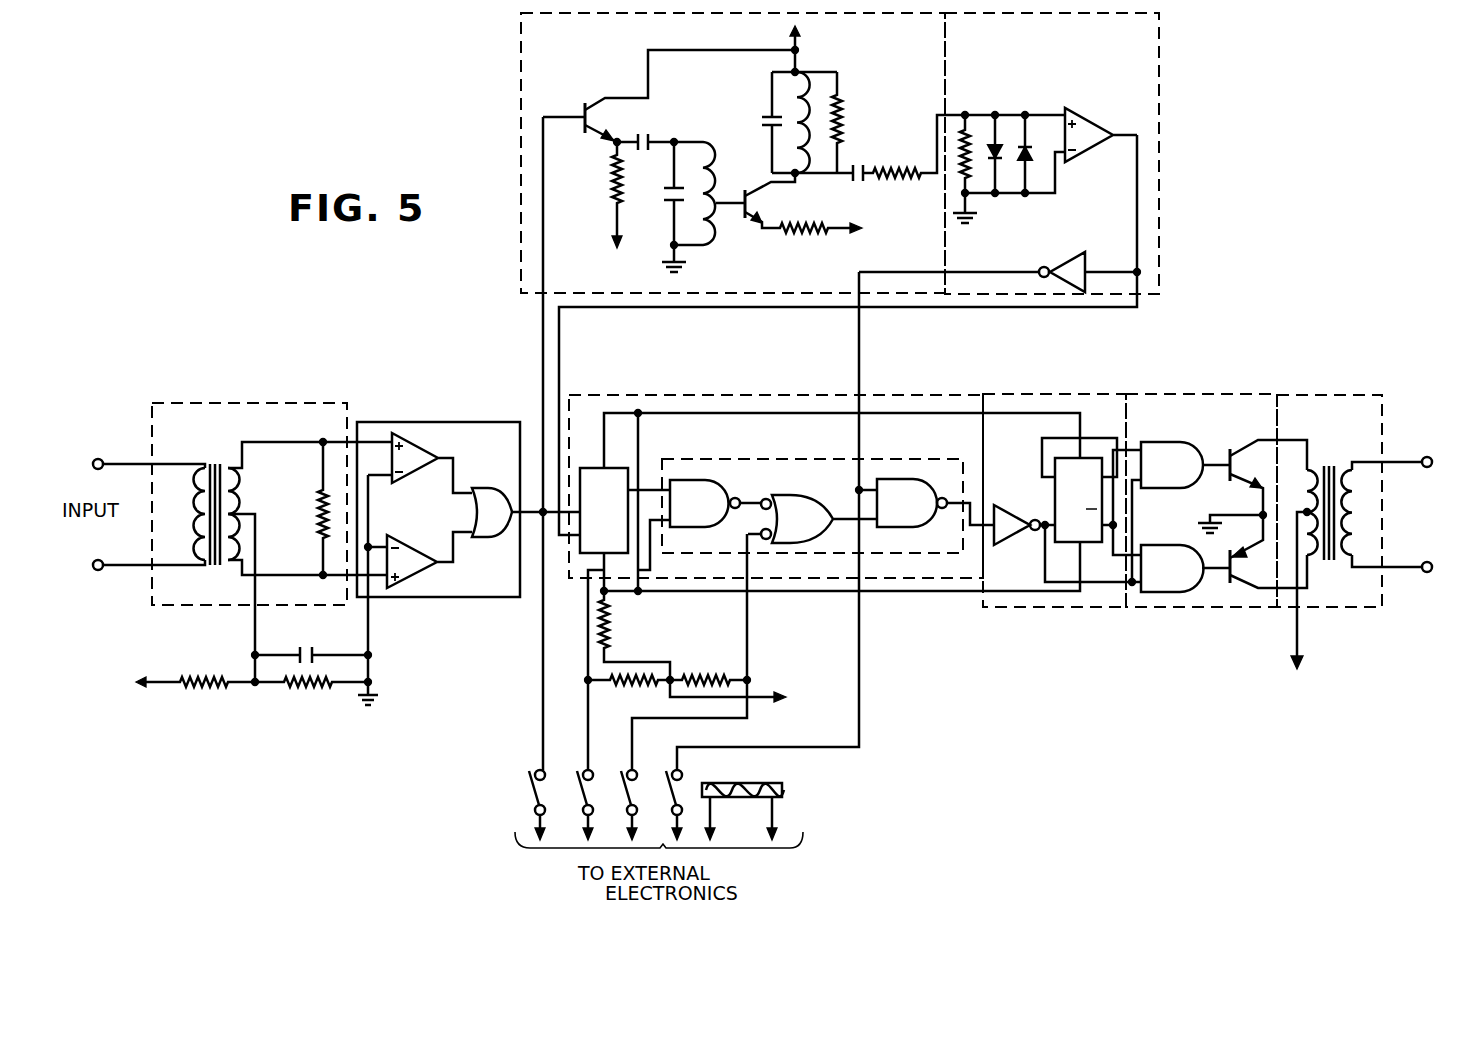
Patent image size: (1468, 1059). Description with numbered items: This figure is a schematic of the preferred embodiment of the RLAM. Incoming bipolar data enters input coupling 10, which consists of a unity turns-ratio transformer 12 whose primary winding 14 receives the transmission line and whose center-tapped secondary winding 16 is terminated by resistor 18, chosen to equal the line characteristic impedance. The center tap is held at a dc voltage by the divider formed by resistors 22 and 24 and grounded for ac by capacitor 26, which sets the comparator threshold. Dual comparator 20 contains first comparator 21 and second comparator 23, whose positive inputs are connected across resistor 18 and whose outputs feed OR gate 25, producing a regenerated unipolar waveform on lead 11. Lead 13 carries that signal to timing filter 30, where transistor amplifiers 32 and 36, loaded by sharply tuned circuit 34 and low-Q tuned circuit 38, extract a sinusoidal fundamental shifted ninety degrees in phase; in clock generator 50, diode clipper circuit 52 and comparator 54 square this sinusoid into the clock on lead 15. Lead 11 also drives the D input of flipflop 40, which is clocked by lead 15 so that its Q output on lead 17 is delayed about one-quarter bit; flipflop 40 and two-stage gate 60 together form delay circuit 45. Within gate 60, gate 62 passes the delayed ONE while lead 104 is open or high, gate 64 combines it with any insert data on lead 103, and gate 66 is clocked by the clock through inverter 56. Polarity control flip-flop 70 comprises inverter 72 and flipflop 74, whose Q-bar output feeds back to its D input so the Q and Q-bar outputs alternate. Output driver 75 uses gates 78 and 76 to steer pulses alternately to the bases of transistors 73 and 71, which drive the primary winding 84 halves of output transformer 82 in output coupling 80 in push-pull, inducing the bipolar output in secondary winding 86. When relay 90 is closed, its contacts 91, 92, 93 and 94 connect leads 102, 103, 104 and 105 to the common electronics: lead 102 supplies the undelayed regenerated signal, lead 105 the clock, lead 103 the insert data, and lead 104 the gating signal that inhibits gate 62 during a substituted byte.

The input coupling 10 is at (212, 403).
The lead 11 is at (535, 522).
The transformer 12 is at (211, 568).
The lead 13 is at (543, 360).
The primary winding 14 is at (186, 466).
The lead 15 is at (1137, 222).
The secondary winding 16 is at (240, 484).
The lead 17 is at (645, 485).
The termination resistor 18 is at (316, 513).
The comparator 20 is at (416, 422).
The first comparator 21 is at (438, 452).
The resistor 22 is at (224, 690).
The second comparator 23 is at (432, 578).
The resistor 24 is at (328, 690).
The OR gate 25 is at (468, 512).
The capacitor 26 is at (312, 645).
The timing filter 30 is at (521, 70).
The transistor amplifier 32 is at (580, 104).
The tuned circuit 34 is at (688, 138).
The transistor amplifier 36 is at (744, 230).
The tuned circuit 38 is at (848, 92).
The delay flipflop 40 is at (592, 553).
The delay circuit 45 is at (667, 395).
The clock generator 50 is at (1158, 88).
The diode clipper circuit 52 is at (1008, 110).
The comparator 54 is at (1088, 115).
The inverter 56 is at (1067, 262).
The two-stage gate 60 is at (806, 459).
The gate 62 is at (706, 514).
The gate 64 is at (813, 531).
The gate 66 is at (916, 514).
The polarity control flip-flop 70 is at (1020, 394).
The transistor 71 is at (1232, 583).
The inverter 72 is at (1010, 508).
The transistor 73 is at (1228, 448).
The flipflop 74 is at (1090, 542).
The output driver 75 is at (1178, 395).
The gate 76 is at (1180, 579).
The gate 78 is at (1181, 476).
The output transformer 80 is at (1318, 395).
The output transformer 82 is at (1339, 446).
The primary winding 84 is at (1310, 558).
The secondary winding 86 is at (1360, 560).
The relay 90 is at (787, 787).
The relay contact 91 is at (528, 790).
The relay contact 92 is at (623, 795).
The relay contact 93 is at (579, 795).
The relay contact 94 is at (667, 795).
The lead 102 is at (542, 642).
The lead 103 is at (630, 735).
The lead 104 is at (586, 722).
The lead 105 is at (861, 665).